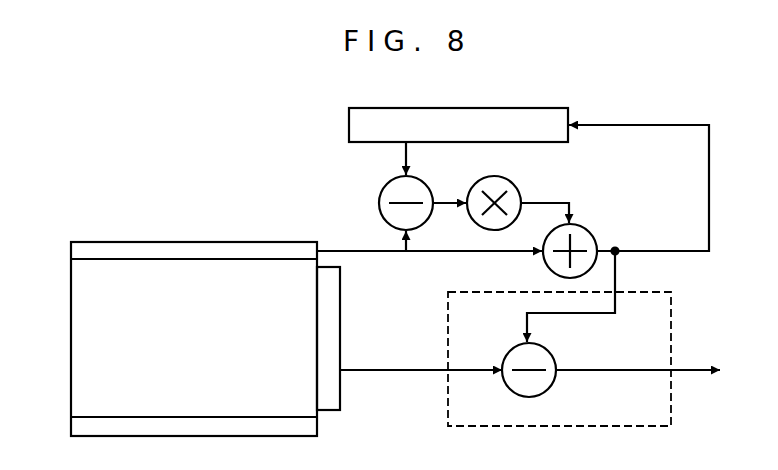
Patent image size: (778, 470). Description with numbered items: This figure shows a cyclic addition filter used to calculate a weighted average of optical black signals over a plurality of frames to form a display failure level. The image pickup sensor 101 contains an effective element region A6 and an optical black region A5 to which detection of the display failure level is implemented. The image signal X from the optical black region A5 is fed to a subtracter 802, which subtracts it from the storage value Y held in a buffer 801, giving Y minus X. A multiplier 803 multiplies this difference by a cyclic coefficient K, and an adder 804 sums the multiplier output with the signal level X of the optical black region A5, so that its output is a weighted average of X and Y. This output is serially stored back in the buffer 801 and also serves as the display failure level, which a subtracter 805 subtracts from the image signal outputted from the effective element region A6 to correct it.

The image pickup sensor 101 is at (70, 310).
The optical black region A5 is at (243, 252).
The effective element region A6 is at (162, 303).
The buffer 801 is at (349, 122).
The subtracter 802 is at (378, 203).
The multiplier 803 is at (520, 191).
The adder 804 is at (590, 231).
The subtracter 805 is at (556, 351).